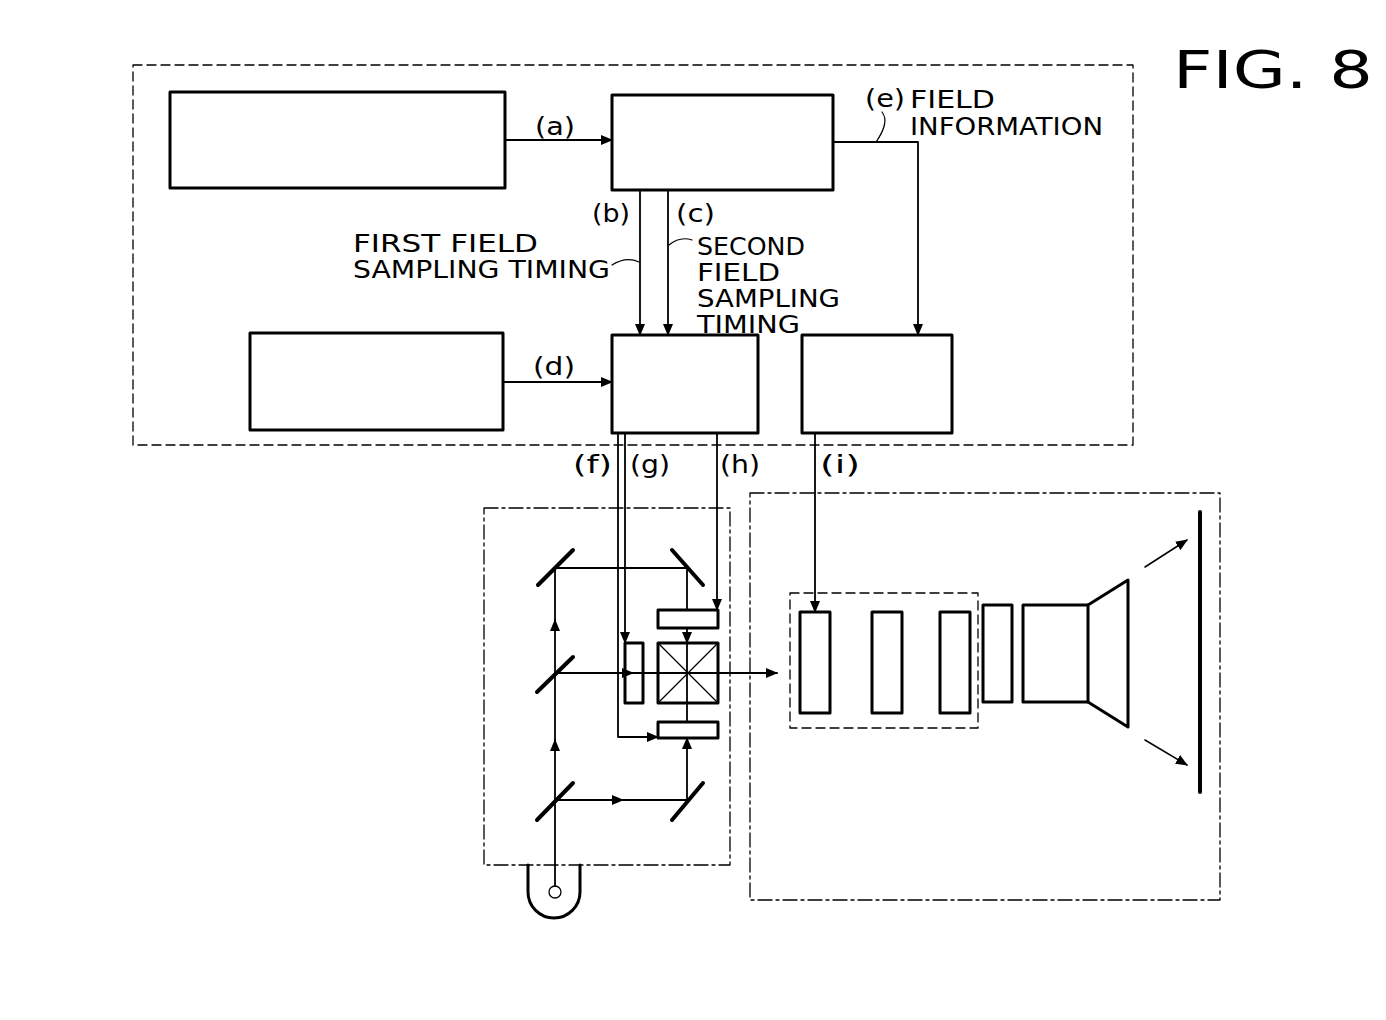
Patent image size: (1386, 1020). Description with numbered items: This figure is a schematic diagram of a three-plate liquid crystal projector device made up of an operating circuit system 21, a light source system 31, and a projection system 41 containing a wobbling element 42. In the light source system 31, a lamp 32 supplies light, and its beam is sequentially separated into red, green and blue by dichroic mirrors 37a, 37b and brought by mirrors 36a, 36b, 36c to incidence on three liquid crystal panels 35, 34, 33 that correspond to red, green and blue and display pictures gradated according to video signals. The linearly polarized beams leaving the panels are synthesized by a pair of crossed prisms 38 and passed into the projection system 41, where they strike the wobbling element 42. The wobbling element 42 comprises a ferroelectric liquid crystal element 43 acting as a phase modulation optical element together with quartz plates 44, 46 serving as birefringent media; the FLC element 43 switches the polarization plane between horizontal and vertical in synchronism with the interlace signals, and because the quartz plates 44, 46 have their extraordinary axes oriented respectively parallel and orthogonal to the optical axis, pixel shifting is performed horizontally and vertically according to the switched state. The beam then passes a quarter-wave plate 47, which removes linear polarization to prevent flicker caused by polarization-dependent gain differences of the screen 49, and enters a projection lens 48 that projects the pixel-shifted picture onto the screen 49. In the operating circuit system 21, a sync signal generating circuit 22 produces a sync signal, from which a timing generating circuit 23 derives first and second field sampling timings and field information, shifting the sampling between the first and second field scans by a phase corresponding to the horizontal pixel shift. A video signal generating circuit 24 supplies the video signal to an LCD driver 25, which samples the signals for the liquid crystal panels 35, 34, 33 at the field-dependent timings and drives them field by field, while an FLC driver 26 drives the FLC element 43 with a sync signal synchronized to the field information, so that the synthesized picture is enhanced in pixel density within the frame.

The operating circuit system 21 is at (1140, 198).
The sync signal generating circuit 22 is at (508, 175).
The timing generating circuit 23 is at (835, 175).
The video signal generating circuit 24 is at (265, 333).
The LCD driver 25 is at (610, 410).
The FLC driver 26 is at (954, 385).
The light source system 31 is at (465, 526).
The lamp 32 is at (582, 892).
The liquid crystal panel 33 is at (660, 615).
The liquid crystal panel 34 is at (627, 696).
The liquid crystal panel 35 is at (670, 740).
The mirror 36a is at (545, 573).
The mirror 36b is at (690, 540).
The mirror 36c is at (668, 808).
The dichroic mirror 37a is at (543, 810).
The dichroic mirror 37b is at (544, 690).
The crossed prisms 38 is at (718, 703).
The projection system 41 is at (1200, 490).
The wobbling element 42 is at (882, 592).
The ferroelectric liquid crystal (FLC) element 43 is at (812, 713).
The quartz plate 44 is at (885, 713).
The quartz plate 46 is at (953, 713).
The quarter-wave plate 47 is at (1000, 605).
The projection lens 48 is at (1060, 702).
The screen 49 is at (1197, 780).